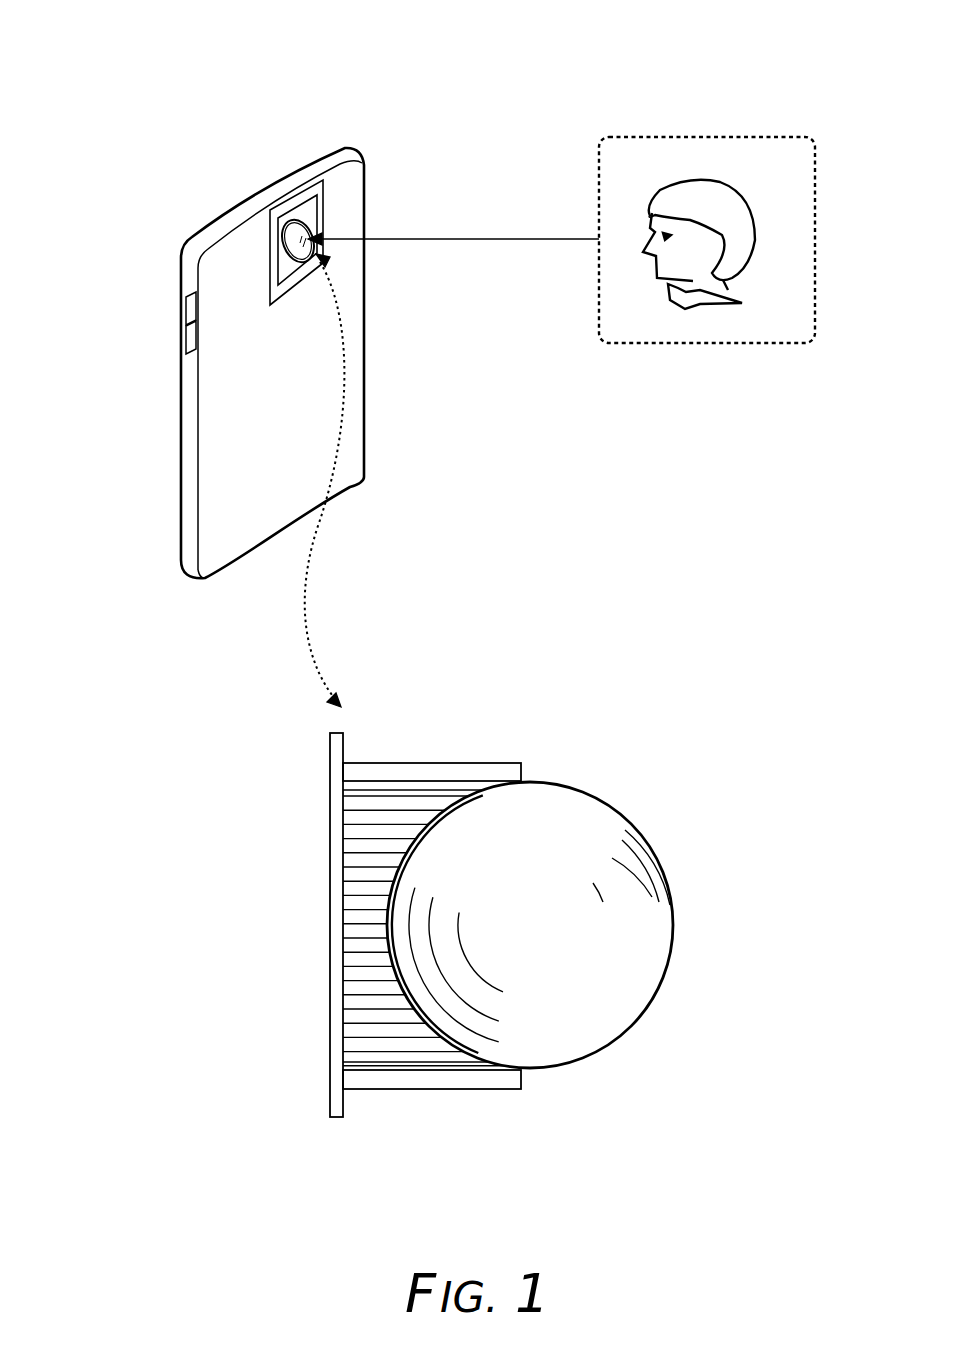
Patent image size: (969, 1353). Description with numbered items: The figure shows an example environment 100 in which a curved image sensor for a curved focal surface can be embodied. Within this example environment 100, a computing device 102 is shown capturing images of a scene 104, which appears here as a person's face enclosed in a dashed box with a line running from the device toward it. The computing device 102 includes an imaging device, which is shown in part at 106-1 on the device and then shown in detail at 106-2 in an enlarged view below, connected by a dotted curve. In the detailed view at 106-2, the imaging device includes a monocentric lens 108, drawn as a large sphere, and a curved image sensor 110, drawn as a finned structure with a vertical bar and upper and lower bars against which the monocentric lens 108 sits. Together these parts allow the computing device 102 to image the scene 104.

The example environment 100 is at (170, 37).
The computing device 102 is at (343, 147).
The scene 104 is at (793, 137).
The imaging device (shown in part) 106-1 is at (270, 230).
The imaging device (shown in detail) 106-2 is at (728, 789).
The monocentric lens 108 is at (610, 1018).
The curved image sensor 110 is at (447, 1090).